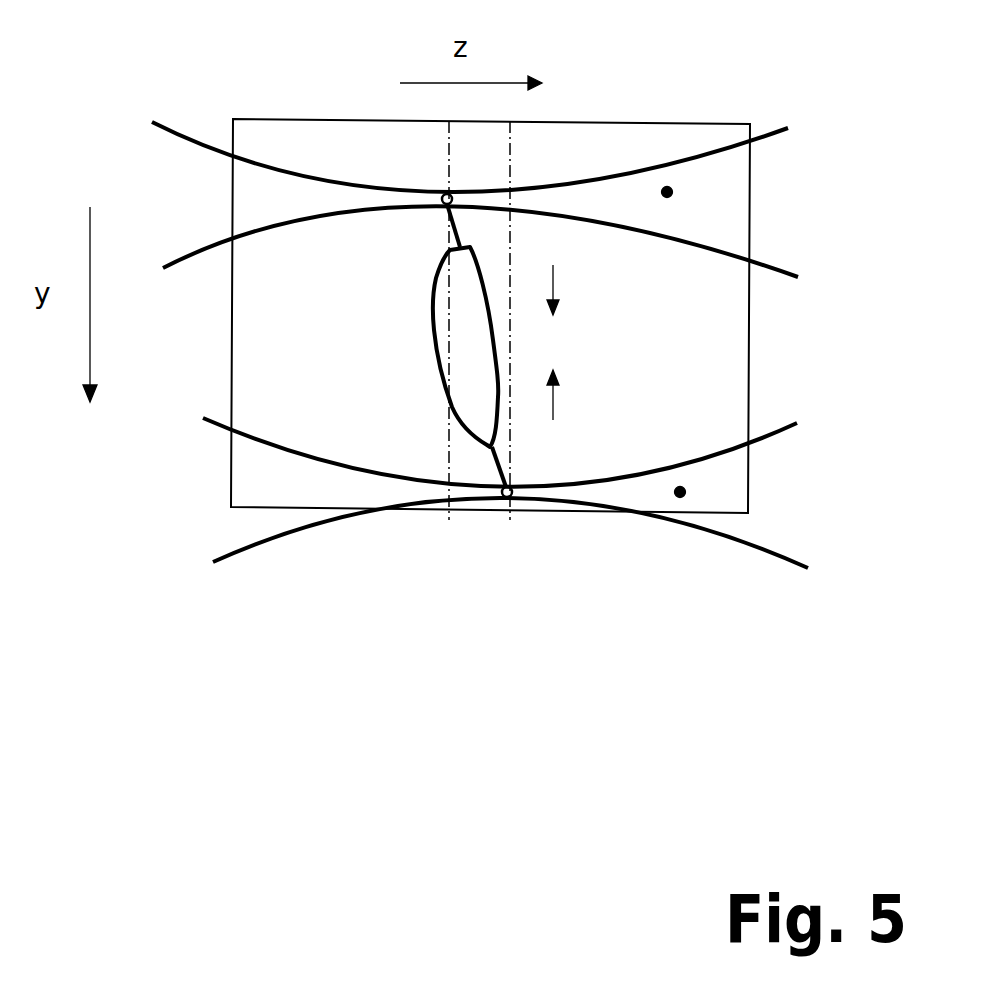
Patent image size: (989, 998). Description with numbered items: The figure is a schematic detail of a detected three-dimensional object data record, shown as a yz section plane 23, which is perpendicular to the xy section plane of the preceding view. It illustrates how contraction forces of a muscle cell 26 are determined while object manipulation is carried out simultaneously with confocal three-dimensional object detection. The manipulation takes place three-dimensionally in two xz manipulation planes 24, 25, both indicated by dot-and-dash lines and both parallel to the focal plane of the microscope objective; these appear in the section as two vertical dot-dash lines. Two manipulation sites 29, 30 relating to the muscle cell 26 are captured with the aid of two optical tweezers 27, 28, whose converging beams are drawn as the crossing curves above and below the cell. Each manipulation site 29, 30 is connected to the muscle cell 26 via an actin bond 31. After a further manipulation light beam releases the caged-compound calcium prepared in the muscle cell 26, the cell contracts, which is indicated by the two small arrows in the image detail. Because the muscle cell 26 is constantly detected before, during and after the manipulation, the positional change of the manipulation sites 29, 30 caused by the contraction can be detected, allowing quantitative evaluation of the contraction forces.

The yz section plane 23 is at (750, 320).
The xz manipulation plane 24 is at (449, 153).
The xz manipulation plane 25 is at (512, 155).
The muscle cell 26 is at (482, 392).
The optical tweezers 27 is at (673, 192).
The optical tweezers 28 is at (680, 498).
The manipulation site 29 is at (438, 198).
The manipulation site 30 is at (507, 500).
The actin bond 31 is at (446, 223).